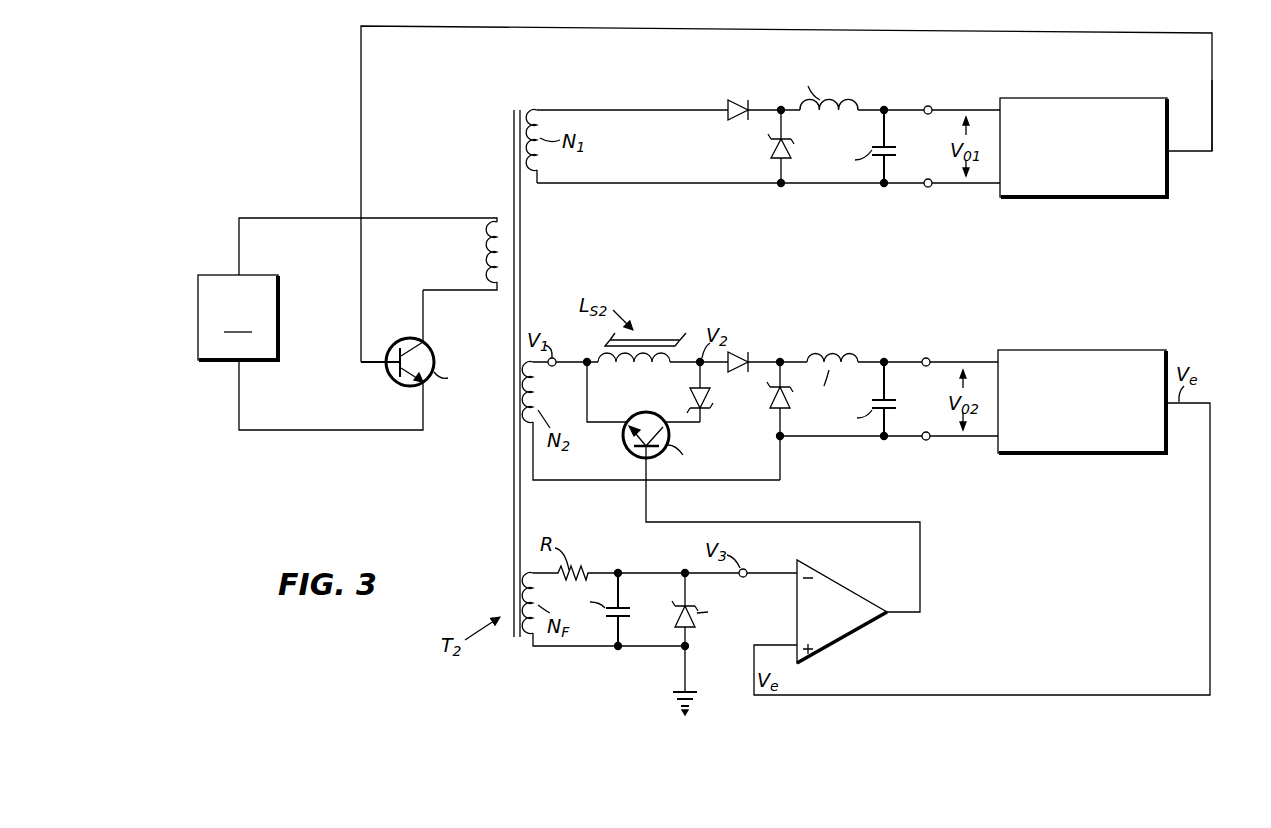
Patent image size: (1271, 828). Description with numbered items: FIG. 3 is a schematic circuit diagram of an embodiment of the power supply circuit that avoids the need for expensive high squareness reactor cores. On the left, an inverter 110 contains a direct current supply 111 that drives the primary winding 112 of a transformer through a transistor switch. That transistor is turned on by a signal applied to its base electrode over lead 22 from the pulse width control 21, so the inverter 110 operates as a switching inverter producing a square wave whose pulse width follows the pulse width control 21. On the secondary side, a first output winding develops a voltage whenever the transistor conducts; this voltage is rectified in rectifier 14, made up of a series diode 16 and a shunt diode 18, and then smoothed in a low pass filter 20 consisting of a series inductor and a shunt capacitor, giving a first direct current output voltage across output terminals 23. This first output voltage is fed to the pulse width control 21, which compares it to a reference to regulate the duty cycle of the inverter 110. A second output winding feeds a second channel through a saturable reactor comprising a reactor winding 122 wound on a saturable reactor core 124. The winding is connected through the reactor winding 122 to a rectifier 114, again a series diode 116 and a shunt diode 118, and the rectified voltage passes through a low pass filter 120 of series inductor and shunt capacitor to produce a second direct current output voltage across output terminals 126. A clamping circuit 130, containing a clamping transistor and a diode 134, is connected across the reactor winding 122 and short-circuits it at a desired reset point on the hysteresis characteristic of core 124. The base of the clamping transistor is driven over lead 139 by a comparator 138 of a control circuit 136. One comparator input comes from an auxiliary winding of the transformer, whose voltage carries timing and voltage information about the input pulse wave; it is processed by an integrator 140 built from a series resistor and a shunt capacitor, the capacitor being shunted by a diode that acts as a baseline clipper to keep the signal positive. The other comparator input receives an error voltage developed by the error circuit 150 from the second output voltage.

The rectifier 14 is at (745, 129).
The series diode 16 is at (724, 118).
The shunt diode 18 is at (770, 150).
The low pass filter 20 is at (862, 99).
The pulse width control 21 is at (1030, 98).
The lead 22 is at (1212, 70).
The output terminals 23 is at (925, 106).
The inverter 110 is at (347, 340).
The direct current supply 111 is at (238, 317).
The primary winding 112 is at (492, 246).
The rectifier 114 is at (776, 388).
The series diode 116 is at (740, 352).
The shunt diode 118 is at (770, 402).
The low pass filter 120 is at (868, 355).
The reactor winding 122 is at (598, 360).
The saturable reactor core 124 is at (660, 338).
The output terminals 126 is at (925, 358).
The clamping circuit 130 is at (618, 447).
The diode 134 is at (690, 398).
The control circuit 136 is at (712, 680).
The comparator 138 is at (863, 602).
The control line 139 is at (920, 528).
The integrator 140 is at (603, 628).
The error circuit 150 is at (1058, 350).